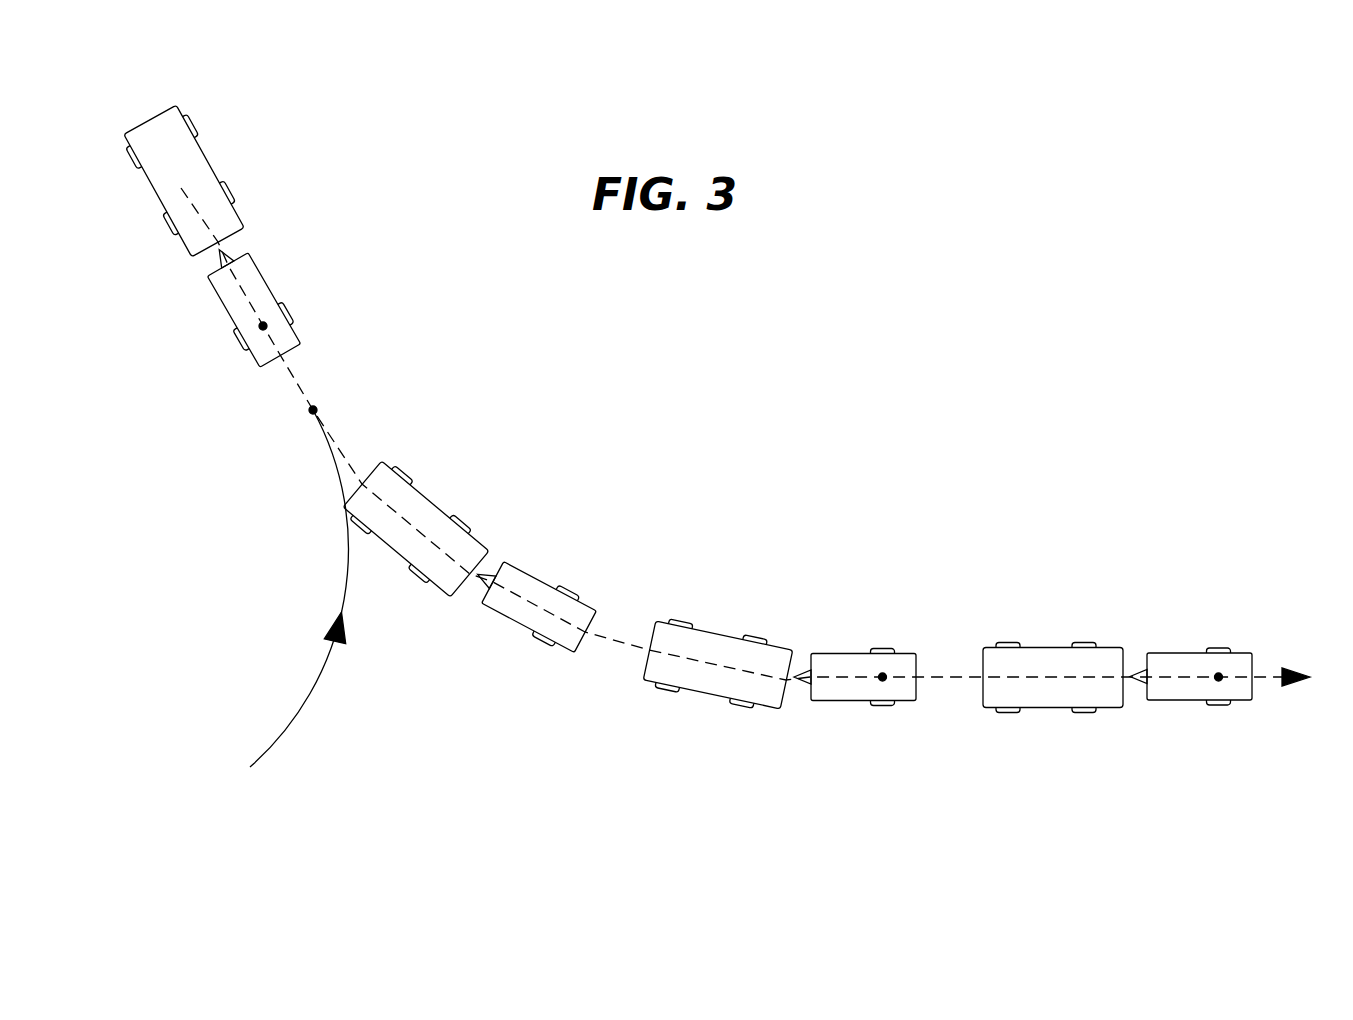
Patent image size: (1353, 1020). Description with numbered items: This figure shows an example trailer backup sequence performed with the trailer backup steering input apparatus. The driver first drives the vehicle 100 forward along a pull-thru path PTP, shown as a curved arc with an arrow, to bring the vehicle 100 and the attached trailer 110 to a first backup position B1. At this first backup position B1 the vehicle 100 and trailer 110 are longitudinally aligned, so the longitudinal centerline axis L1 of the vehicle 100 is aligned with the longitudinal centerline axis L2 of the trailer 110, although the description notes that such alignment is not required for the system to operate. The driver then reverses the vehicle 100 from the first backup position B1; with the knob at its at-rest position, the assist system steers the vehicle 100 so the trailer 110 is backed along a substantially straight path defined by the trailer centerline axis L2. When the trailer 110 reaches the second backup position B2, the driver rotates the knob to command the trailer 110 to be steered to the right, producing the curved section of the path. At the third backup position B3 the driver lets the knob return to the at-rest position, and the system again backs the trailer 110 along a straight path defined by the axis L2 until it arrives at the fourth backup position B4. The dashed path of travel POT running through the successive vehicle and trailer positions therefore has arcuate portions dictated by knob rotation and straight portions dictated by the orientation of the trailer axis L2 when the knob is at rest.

The vehicle 100 is at (186, 154).
The trailer 110 is at (257, 256).
The longitudinal centerline axis of the vehicle L1 is at (200, 218).
The longitudinal centerline axis of the trailer L2 is at (252, 298).
The first backup position B1 is at (261, 328).
The second backup position B2 is at (311, 413).
The third backup position B3 is at (880, 681).
The fourth backup position B4 is at (1218, 681).
The path of travel POT is at (963, 677).
The pull-thru path PTP is at (297, 705).